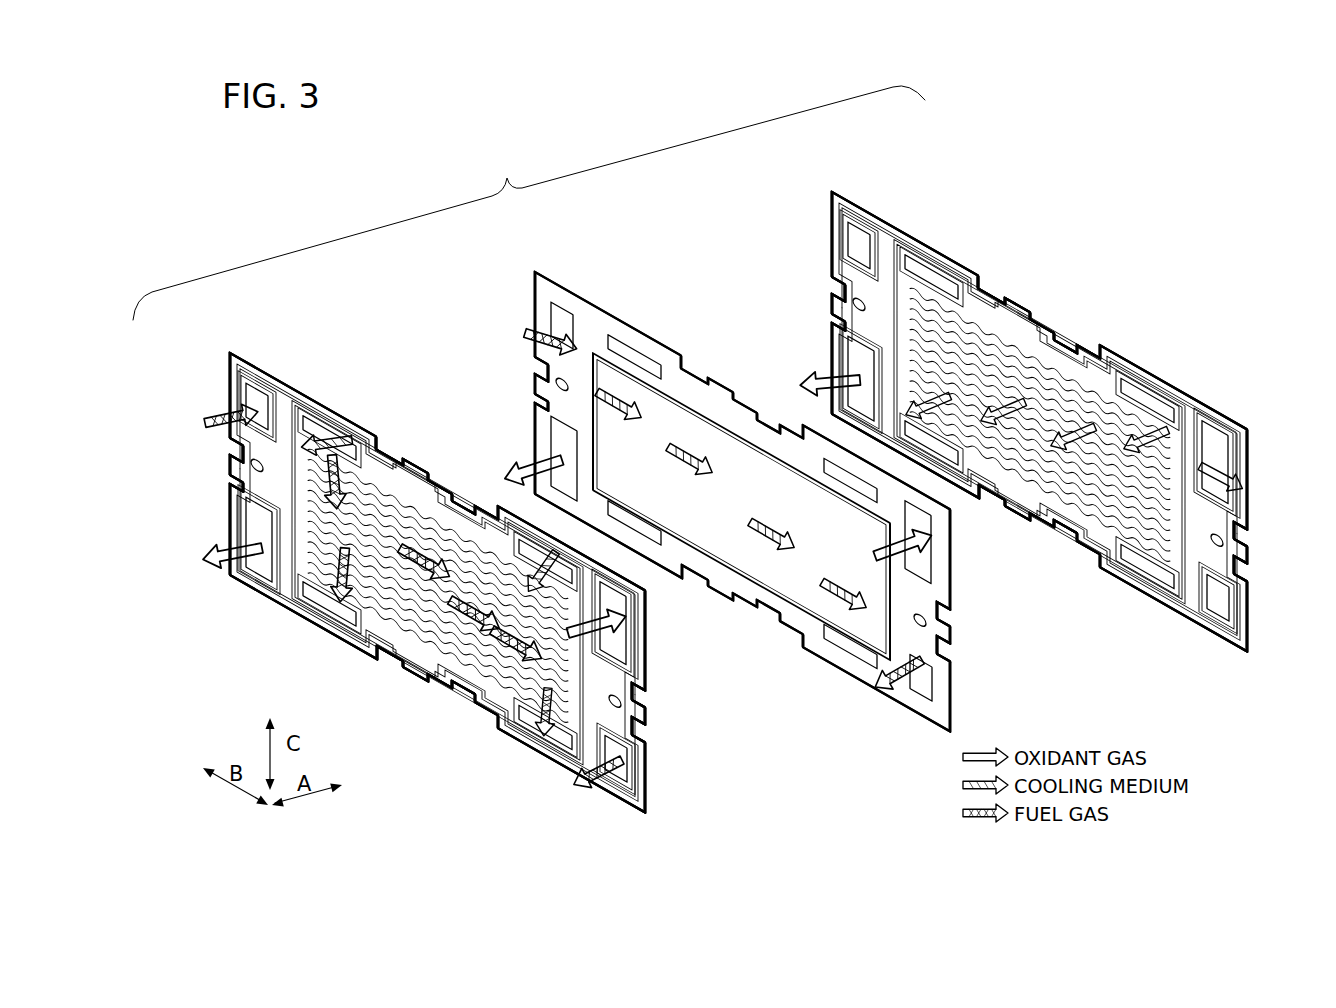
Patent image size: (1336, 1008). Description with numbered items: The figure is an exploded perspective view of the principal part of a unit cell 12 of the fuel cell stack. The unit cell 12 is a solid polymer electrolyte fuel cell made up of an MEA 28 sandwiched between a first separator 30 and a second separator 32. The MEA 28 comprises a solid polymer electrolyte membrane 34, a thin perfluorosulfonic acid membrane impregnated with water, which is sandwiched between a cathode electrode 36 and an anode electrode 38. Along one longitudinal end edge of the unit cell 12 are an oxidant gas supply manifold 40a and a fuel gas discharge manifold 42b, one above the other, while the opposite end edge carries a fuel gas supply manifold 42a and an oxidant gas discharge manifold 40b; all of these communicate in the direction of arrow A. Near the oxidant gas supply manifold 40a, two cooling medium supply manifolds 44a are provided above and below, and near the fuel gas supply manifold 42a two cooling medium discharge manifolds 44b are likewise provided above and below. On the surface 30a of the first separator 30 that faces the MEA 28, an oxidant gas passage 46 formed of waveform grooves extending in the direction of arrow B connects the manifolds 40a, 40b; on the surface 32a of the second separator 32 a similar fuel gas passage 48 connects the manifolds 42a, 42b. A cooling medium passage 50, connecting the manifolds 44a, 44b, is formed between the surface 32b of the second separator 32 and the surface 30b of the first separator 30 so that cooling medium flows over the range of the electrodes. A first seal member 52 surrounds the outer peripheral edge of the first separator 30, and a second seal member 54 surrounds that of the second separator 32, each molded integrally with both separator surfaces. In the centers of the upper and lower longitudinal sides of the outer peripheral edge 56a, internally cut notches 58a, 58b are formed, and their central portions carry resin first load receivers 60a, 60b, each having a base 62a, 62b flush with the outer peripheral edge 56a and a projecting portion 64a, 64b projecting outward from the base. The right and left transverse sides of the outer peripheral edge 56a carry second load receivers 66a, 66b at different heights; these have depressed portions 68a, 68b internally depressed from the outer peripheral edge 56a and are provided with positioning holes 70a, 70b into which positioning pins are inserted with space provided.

The unit cell 12 is at (343, 292).
The MEA 28 is at (546, 270).
The first separator 30 is at (888, 218).
The surface of the first separator 30a is at (1195, 618).
The surface of the first separator 30b is at (1220, 642).
The second separator 32 is at (242, 350).
The surface of the second separator 32a is at (640, 786).
The surface of the second separator 32b is at (638, 808).
The solid polymer electrolyte membrane 34 is at (931, 720).
The cathode electrode 36 is at (695, 405).
The anode electrode 38 is at (790, 580).
The oxidant gas supply manifold 40a is at (618, 630).
The oxidant gas discharge manifold 40b is at (261, 570).
The fuel gas supply manifold 42a is at (245, 398).
The fuel gas discharge manifold 42b is at (622, 760).
The cooling medium supply manifold 44a is at (562, 556).
The cooling medium discharge manifold 44b is at (332, 436).
The oxidant gas passage 46 is at (1103, 400).
The fuel gas passage 48 is at (392, 488).
The cooling medium passage 50 is at (397, 656).
The first seal member 52 is at (903, 250).
The second seal member 54 is at (305, 406).
The outer peripheral edge 56a is at (360, 418).
The notch 58a is at (482, 500).
The notch 58b is at (487, 716).
The first load receiver 60a is at (413, 450).
The first load receiver 60b is at (405, 678).
The base 62a is at (456, 470).
The base 62b is at (457, 698).
The projecting portion 64a is at (427, 468).
The projecting portion 64b is at (432, 691).
The second load receiver 66a is at (634, 694).
The second load receiver 66b is at (252, 454).
The depressed portion 68a is at (636, 726).
The depressed portion 68b is at (236, 441).
The positioning hole 70a is at (614, 695).
The positioning hole 70b is at (255, 470).